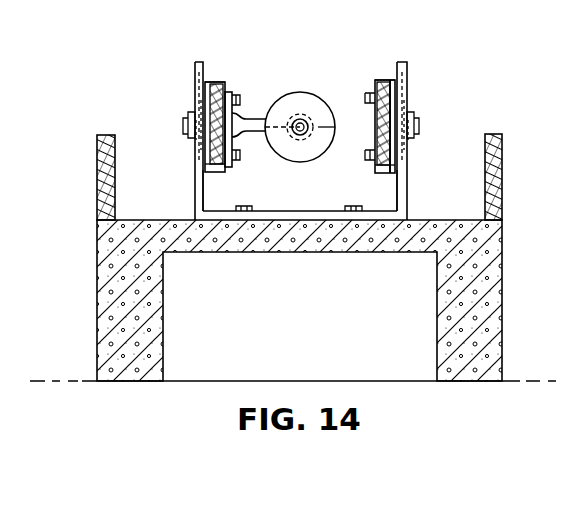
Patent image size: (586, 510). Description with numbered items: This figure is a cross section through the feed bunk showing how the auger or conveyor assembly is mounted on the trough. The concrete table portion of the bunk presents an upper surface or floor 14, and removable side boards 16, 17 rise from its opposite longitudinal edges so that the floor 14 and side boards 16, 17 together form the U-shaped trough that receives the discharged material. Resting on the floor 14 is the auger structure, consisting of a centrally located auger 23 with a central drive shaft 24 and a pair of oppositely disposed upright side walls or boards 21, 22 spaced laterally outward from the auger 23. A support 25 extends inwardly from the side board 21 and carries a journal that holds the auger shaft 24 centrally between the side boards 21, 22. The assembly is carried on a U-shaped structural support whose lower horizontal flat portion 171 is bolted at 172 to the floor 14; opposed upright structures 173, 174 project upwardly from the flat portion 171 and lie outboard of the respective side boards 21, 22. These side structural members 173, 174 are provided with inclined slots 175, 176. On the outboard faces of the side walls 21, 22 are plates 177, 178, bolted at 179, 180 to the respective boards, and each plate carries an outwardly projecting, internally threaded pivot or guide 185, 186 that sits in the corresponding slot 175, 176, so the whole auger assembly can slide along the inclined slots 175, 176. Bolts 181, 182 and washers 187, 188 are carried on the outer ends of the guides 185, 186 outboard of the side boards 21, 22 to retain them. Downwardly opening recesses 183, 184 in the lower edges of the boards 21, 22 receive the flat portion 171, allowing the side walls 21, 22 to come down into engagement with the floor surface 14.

The upper surface 14 is at (218, 16).
The removable side board 16 is at (103, 163).
The removable side board 17 is at (504, 170).
The upright wall 21 is at (221, 82).
The upright wall 22 is at (380, 80).
The auger 23 is at (296, 92).
The central drive shaft 24 is at (303, 121).
The auger support 25 is at (251, 119).
The lower horizontal flat portion 171 is at (287, 214).
The bolt 172 is at (248, 206).
The upright structure 173 is at (199, 199).
The upright structure 174 is at (400, 196).
The inclined slot 175 is at (195, 82).
The inclined slot 176 is at (405, 80).
The plate 177 is at (207, 80).
The plate 178 is at (391, 79).
The bolt 179 is at (236, 98).
The bolt 180 is at (366, 97).
The bolt 181 is at (198, 108).
The bolt 182 is at (405, 102).
The downwardly opening recess 183 is at (212, 168).
The downwardly opening recess 184 is at (386, 168).
The pivot or guide 185 is at (192, 136).
The pivot or guide 186 is at (410, 148).
The washer 187 is at (184, 114).
The washer 188 is at (418, 118).